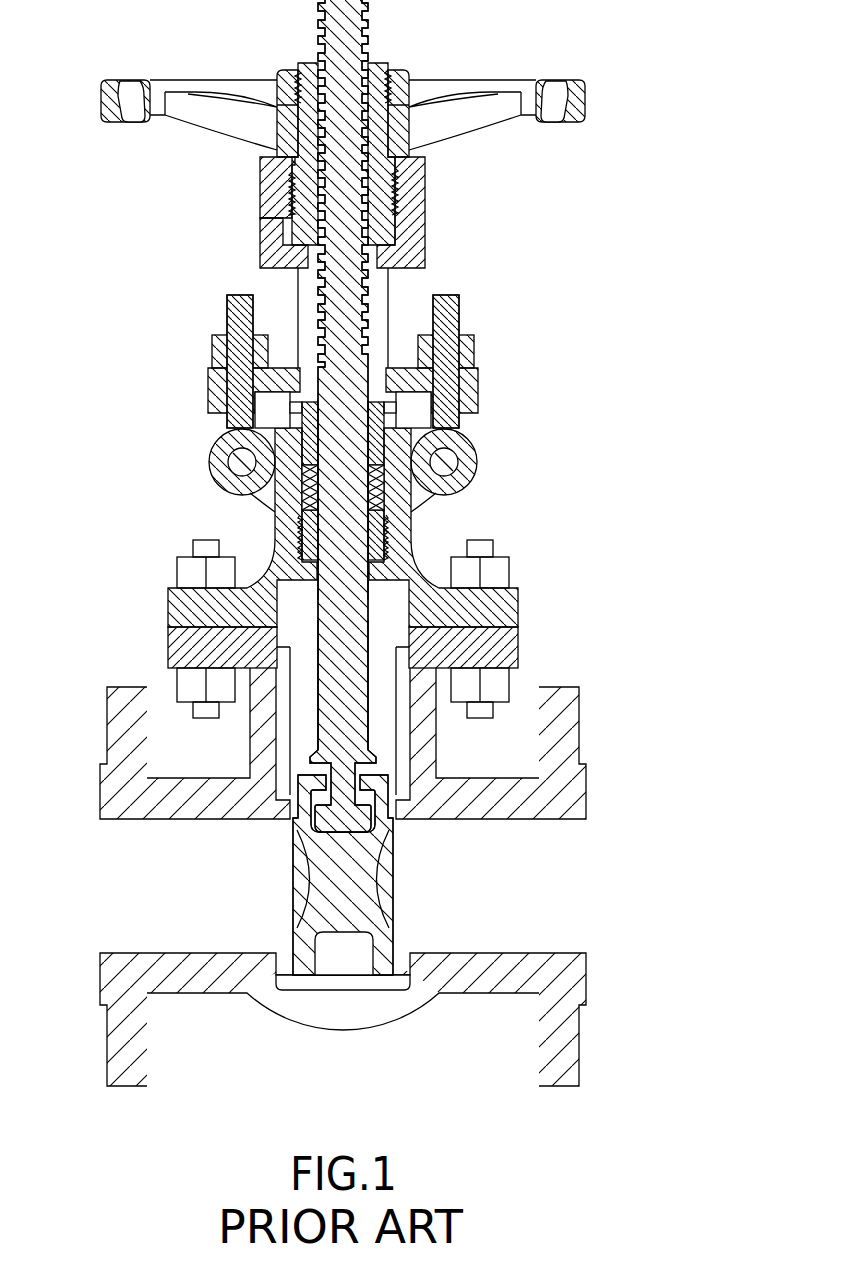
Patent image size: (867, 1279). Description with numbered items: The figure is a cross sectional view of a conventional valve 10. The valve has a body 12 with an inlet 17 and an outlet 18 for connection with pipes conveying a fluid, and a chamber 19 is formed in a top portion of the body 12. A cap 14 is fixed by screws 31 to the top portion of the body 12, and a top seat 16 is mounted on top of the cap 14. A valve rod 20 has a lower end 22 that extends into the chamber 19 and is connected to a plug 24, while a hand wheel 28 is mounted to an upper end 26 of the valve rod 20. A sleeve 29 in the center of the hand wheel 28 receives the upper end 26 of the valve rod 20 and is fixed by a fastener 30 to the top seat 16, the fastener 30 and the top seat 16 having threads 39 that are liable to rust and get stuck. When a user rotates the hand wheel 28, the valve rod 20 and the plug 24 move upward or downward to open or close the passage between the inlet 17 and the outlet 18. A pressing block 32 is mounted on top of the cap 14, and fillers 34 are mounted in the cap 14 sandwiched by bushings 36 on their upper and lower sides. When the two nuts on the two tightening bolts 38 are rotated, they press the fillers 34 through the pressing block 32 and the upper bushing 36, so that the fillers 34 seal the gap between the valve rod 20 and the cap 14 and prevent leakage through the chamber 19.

The valve 10 is at (587, 322).
The body 12 is at (570, 729).
The cap 14 is at (287, 443).
The top seat 16 is at (418, 258).
The inlet 17 is at (113, 882).
The outlet 18 is at (580, 863).
The chamber 19 is at (385, 653).
The valve rod 20 is at (353, 500).
The lower end 22 is at (342, 712).
The plug 24 is at (365, 917).
The upper end 26 is at (348, 36).
The hand wheel 28 is at (578, 92).
The sleeve 29 is at (382, 110).
The fastener 30 is at (273, 164).
The screws 31 is at (497, 570).
The pressing block 32 is at (473, 397).
The fillers 34 is at (388, 478).
The bushings 36 is at (380, 445).
The tightening bolts 38 is at (452, 313).
The threads 39 is at (408, 190).